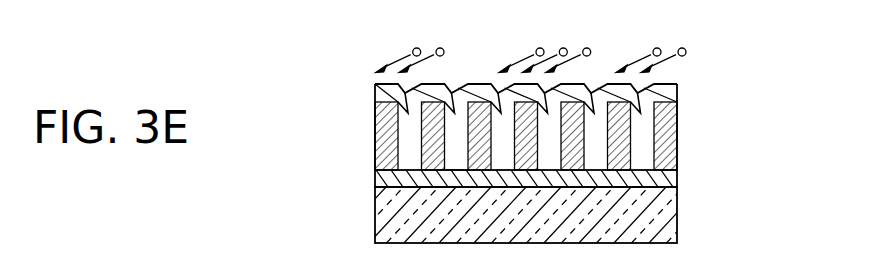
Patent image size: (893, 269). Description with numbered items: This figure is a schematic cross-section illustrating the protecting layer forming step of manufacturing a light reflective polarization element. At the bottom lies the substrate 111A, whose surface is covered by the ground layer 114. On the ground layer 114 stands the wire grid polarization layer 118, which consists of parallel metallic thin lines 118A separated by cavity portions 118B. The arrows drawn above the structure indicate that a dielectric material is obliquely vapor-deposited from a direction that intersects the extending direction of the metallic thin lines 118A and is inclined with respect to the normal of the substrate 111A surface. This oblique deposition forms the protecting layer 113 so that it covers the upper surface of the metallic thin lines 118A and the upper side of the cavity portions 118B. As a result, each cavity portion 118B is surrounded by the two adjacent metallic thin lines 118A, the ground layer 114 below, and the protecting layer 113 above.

The substrate 111A is at (677, 208).
The ground layer 114 is at (677, 172).
The wire grid polarization layer 118 is at (566, 89).
The metallic thin lines 118A is at (434, 118).
The cavity portions 118B is at (457, 115).
The protecting layer 113 is at (660, 84).